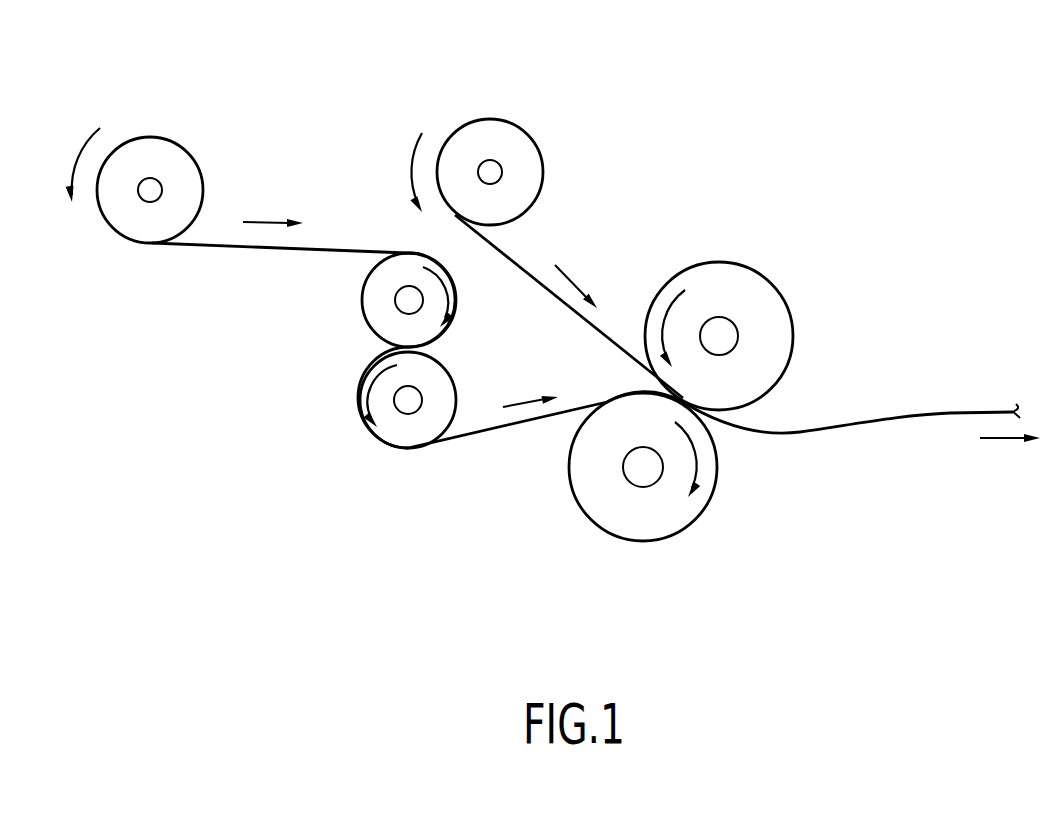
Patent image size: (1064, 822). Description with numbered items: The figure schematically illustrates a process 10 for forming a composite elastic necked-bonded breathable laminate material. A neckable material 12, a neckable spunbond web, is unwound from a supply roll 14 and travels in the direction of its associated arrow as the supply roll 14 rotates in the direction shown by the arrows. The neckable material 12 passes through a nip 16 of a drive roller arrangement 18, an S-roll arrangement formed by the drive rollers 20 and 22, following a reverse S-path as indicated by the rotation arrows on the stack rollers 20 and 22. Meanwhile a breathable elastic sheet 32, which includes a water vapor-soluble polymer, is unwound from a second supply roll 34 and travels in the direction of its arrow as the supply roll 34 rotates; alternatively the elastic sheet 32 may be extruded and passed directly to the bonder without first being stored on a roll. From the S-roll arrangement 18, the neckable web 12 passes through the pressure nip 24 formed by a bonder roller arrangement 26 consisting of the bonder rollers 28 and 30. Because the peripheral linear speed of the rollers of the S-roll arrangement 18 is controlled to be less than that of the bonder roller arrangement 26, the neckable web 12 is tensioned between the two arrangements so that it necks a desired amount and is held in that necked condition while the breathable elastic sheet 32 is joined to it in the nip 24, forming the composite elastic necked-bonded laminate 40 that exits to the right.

The process for forming a composite elastic necked-bonded breathable laminate materi 10 is at (700, 130).
The neckable material 12 is at (237, 248).
The supply roll 14 is at (150, 148).
The nip 16 is at (450, 349).
The drive roller arrangement 18 is at (360, 353).
The drive roller 20 is at (373, 298).
The drive roller 22 is at (387, 435).
The nip 24 is at (612, 376).
The bonder roller arrangement 26 is at (629, 317).
The bonder roller 28 is at (770, 302).
The bonder roller 30 is at (600, 513).
The breathable elastic sheet 32 is at (527, 257).
The supply roll 34 is at (502, 128).
The composite elastic necked-bonded laminate 40 is at (953, 410).